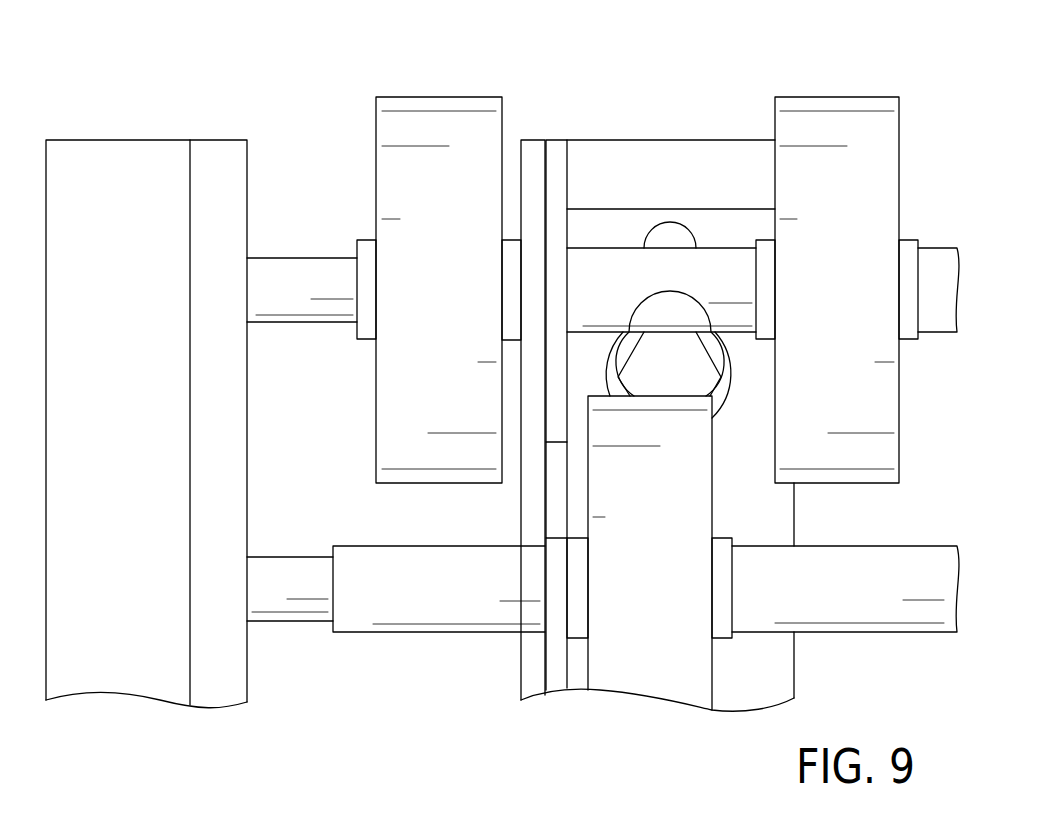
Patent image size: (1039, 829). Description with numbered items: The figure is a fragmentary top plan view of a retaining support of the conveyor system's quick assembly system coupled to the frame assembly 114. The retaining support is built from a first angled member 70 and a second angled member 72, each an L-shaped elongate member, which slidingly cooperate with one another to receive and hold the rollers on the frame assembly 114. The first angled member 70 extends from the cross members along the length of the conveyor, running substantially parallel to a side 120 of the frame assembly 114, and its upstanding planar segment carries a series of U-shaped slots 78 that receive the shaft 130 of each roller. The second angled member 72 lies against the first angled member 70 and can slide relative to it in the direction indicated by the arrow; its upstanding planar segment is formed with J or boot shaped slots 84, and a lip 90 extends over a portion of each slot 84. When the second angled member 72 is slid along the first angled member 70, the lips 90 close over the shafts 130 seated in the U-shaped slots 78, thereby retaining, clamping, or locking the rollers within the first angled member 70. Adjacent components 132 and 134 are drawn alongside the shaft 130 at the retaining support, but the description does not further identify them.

The first angled member 70 is at (532, 155).
The second angled member 72 is at (584, 226).
The U-shaped slot 78 is at (534, 250).
The J-shaped slot 84 is at (555, 442).
The lip 90 is at (545, 618).
The side 120 is at (146, 453).
The frame assembly 114 is at (125, 663).
The shaft 130 is at (288, 607).
The bearing block 132 is at (645, 683).
The coupling shaft 134 is at (437, 607).